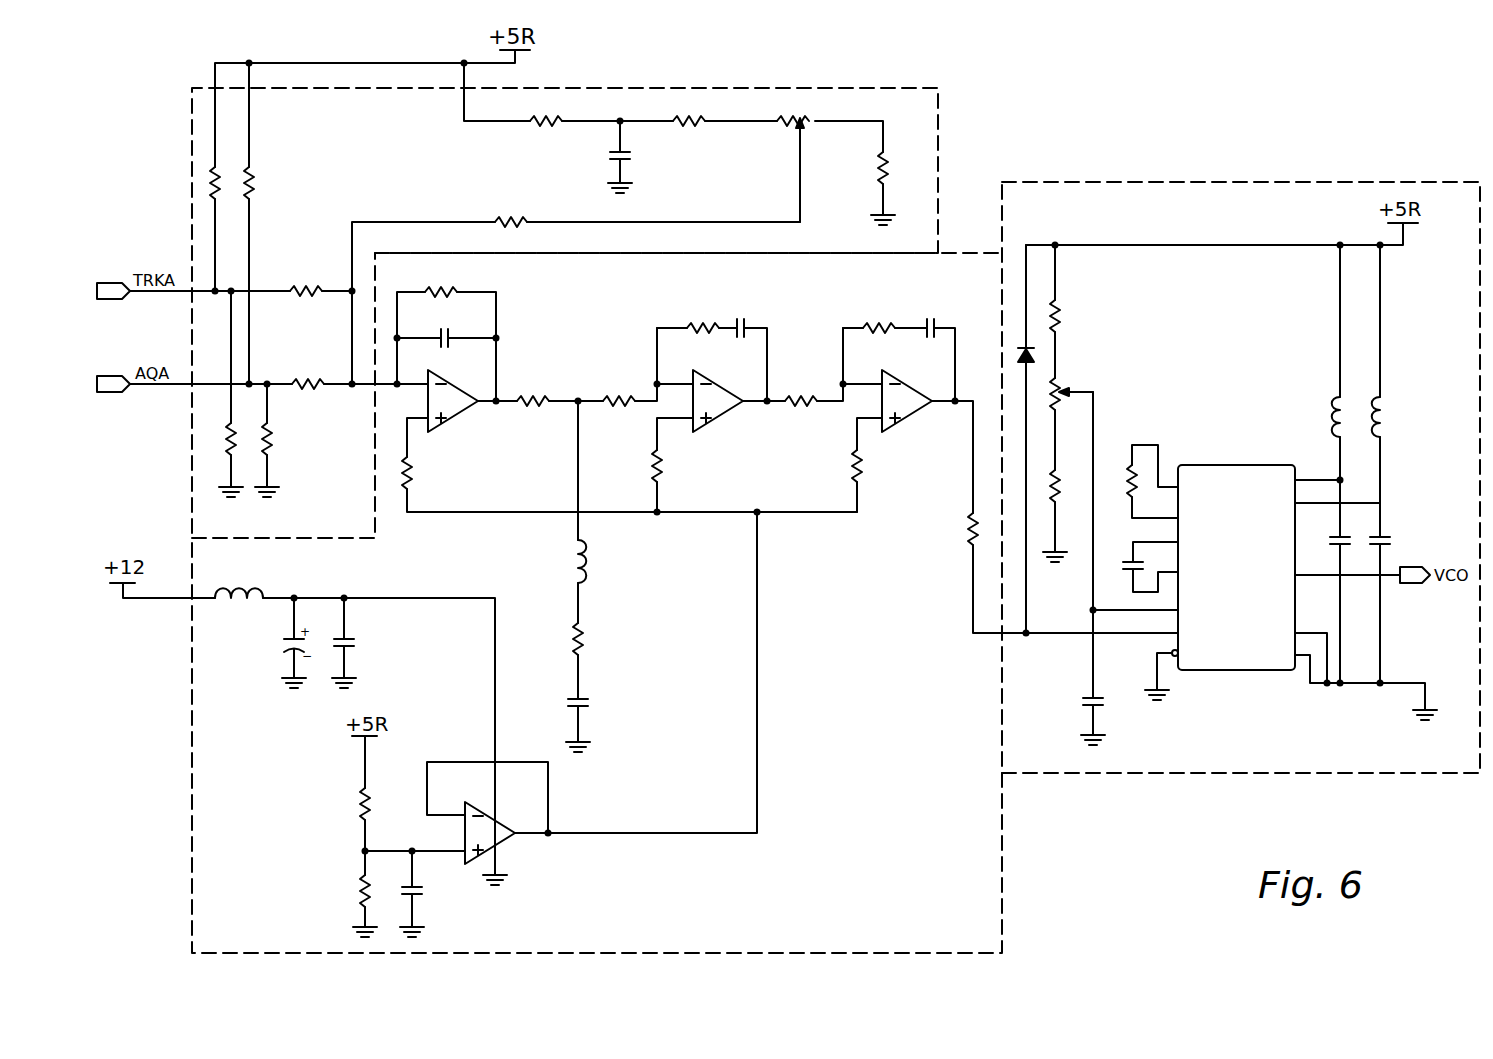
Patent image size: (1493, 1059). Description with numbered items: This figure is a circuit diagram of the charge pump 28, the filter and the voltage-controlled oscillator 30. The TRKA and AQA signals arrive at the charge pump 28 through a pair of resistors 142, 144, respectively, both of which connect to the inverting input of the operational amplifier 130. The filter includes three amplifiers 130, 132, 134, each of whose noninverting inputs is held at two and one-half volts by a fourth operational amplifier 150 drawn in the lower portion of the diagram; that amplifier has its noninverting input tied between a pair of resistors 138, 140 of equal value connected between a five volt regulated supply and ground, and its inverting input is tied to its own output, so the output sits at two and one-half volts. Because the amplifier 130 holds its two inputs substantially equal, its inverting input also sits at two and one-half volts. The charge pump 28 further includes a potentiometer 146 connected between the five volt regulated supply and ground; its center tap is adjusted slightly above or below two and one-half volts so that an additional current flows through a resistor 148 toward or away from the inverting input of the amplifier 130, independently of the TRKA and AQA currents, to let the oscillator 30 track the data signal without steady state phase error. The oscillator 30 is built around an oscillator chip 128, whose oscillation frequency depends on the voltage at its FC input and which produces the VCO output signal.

The charge pump 28 is at (837, 88).
The voltage-controlled oscillator 30 is at (1297, 773).
The oscillator chip 128 is at (1238, 465).
The operational amplifier 130 is at (466, 418).
The operational amplifier 132 is at (727, 418).
The operational amplifier 134 is at (915, 418).
The resistor 138 is at (362, 801).
The resistor 140 is at (362, 889).
The resistor 142 is at (302, 289).
The resistor 144 is at (317, 388).
The potentiometer 146 is at (787, 127).
The resistor 148 is at (515, 220).
The reference operational amplifier 150 is at (758, 779).